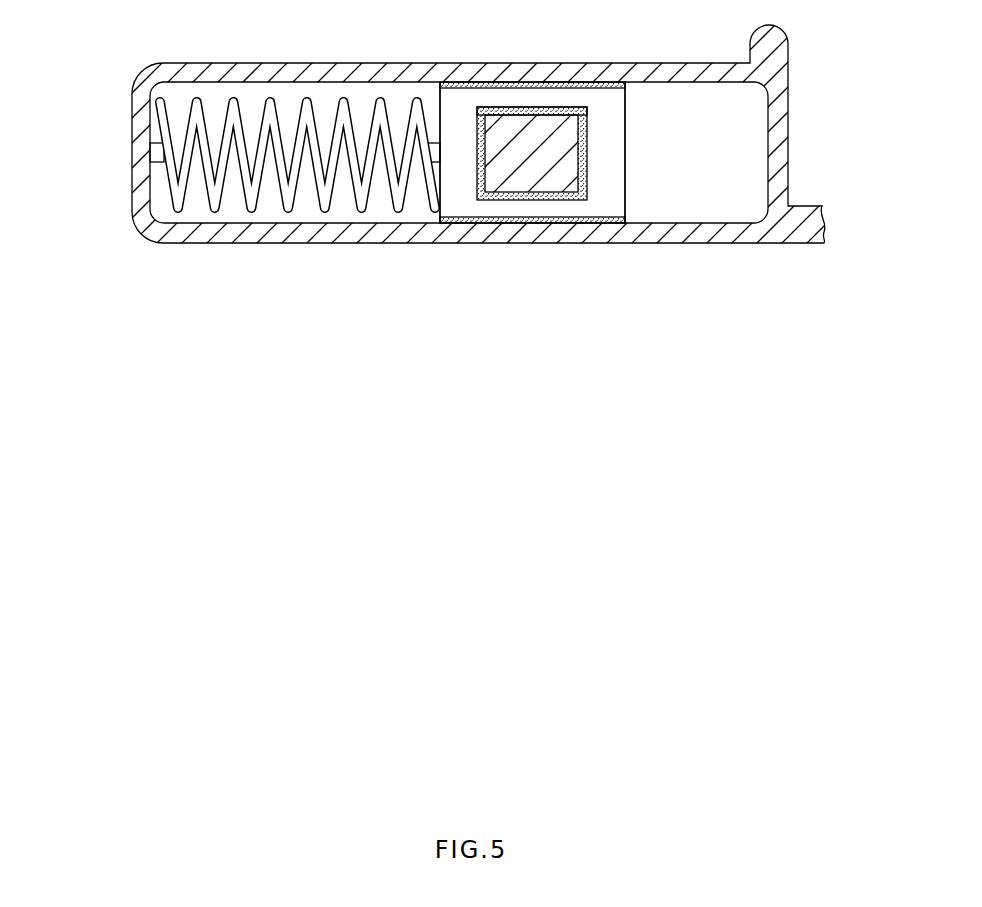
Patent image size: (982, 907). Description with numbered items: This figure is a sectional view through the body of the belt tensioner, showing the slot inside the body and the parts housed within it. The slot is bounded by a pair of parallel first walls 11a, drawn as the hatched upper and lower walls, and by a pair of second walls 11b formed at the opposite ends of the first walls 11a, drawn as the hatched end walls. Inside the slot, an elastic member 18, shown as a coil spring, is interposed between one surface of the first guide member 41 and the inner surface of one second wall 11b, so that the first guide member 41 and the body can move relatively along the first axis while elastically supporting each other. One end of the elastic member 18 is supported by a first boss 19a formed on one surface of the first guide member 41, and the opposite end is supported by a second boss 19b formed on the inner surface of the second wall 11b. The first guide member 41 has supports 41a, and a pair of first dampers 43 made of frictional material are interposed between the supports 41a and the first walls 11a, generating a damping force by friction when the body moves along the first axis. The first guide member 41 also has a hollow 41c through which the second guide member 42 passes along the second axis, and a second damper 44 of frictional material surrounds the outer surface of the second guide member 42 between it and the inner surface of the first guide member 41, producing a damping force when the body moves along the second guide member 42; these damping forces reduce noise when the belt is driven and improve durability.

The first wall 11a is at (258, 72).
The second wall 11b is at (141, 150).
The elastic member 18 is at (288, 205).
The first boss 19a is at (430, 142).
The second boss 19b is at (160, 153).
The first guide member 41 is at (640, 147).
The support 41a is at (577, 95).
The hollow 41c is at (581, 142).
The second guide member 42 is at (535, 145).
The first damper 43 is at (607, 83).
The second damper 44 is at (498, 108).